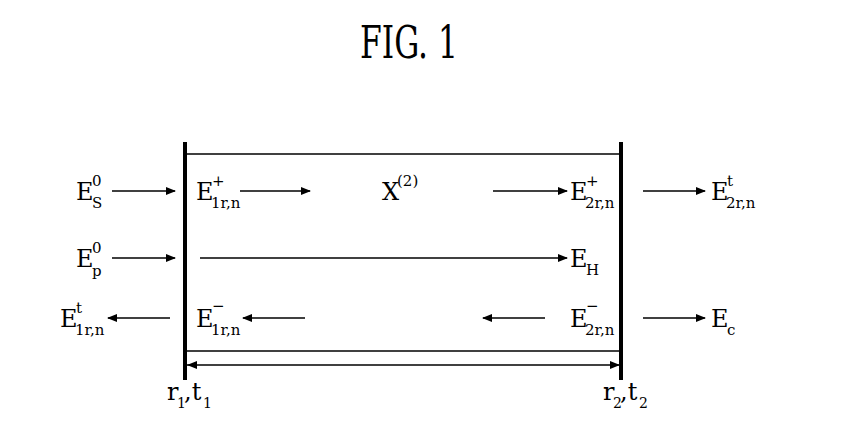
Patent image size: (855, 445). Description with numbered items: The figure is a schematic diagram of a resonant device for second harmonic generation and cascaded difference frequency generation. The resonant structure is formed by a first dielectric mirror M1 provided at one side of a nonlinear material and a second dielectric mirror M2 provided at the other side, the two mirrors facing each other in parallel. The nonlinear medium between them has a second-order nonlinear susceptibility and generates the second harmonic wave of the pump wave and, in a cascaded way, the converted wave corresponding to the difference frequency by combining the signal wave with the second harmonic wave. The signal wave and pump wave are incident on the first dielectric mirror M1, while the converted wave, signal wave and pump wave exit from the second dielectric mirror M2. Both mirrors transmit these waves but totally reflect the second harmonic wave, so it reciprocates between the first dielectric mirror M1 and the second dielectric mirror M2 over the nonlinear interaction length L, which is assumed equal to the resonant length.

The first dielectric mirror M1 is at (186, 143).
The second dielectric mirror M2 is at (620, 143).
The nonlinear interaction length L is at (403, 382).